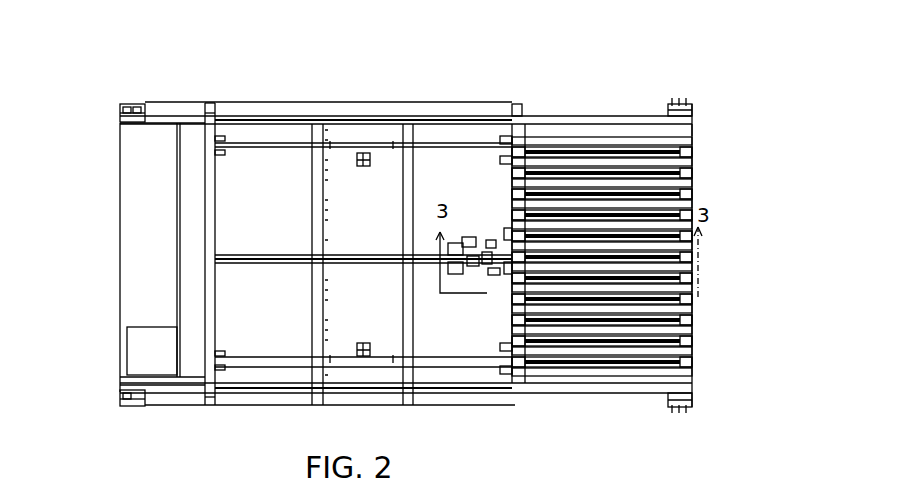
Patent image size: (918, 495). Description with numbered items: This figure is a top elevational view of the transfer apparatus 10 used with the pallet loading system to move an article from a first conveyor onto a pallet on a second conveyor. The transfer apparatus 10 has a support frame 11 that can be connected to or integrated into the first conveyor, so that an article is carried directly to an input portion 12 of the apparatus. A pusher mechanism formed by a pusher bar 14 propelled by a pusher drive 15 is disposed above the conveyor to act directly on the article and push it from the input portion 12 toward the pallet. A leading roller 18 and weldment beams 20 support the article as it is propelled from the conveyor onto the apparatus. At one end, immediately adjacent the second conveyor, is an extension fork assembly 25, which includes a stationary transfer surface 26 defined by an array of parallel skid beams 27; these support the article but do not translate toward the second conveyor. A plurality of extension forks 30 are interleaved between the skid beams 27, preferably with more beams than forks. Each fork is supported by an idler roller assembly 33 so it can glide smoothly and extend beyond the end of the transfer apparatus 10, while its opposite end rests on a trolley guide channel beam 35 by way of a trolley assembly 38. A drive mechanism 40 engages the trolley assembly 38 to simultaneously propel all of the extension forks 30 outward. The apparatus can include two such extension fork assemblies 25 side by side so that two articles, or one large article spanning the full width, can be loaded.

The transfer apparatus 10 is at (498, 86).
The support frame 11 is at (312, 190).
The input portion 12 is at (392, 117).
The pusher bar 14 is at (215, 108).
The pusher drive 15 is at (128, 350).
The leading roller 18 is at (143, 107).
The weldment beams 20 is at (298, 117).
The extension fork assembly 25 is at (695, 133).
The stationary transfer surface 26 is at (632, 110).
The skid beams 27 is at (695, 312).
The extension forks 30 is at (695, 196).
The idler roller assembly 33 is at (695, 248).
The trolley guide channel beam 35 is at (552, 143).
The trolley assembly 38 is at (500, 140).
The drive mechanism 40 is at (484, 275).